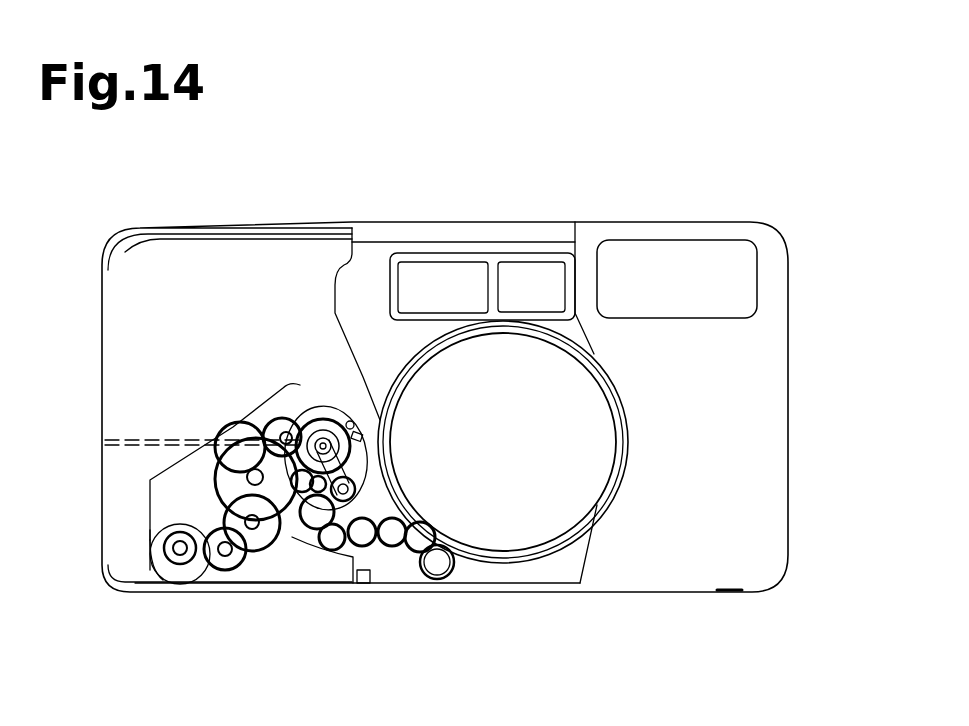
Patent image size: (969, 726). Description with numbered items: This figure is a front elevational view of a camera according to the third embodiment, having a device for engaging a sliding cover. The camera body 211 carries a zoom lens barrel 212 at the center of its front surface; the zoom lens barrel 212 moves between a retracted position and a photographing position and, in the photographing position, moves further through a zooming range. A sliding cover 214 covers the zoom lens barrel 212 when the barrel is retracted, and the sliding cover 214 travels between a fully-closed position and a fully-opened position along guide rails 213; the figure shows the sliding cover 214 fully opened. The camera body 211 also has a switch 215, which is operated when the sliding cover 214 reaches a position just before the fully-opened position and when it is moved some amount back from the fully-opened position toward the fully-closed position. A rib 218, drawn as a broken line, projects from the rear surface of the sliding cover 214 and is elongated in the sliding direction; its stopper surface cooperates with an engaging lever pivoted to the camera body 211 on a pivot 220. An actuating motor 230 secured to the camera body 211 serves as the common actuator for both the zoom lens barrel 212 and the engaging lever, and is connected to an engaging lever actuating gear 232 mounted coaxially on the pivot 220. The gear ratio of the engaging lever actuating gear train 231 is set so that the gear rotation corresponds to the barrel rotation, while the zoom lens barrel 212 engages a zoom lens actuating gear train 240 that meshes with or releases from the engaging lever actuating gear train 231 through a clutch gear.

The camera body 211 is at (765, 303).
The zoom lens barrel 212 is at (530, 550).
The guide rails 213 is at (493, 235).
The sliding cover 214 is at (224, 276).
The switch 215 is at (361, 590).
The rib 218 is at (162, 437).
The pivot 220 is at (324, 414).
The actuating motor 230 is at (162, 563).
The engaging lever actuating gear train 231 is at (234, 426).
The engaging lever actuating gear 232 is at (360, 395).
The zoom lens actuating gear train 240 is at (370, 560).